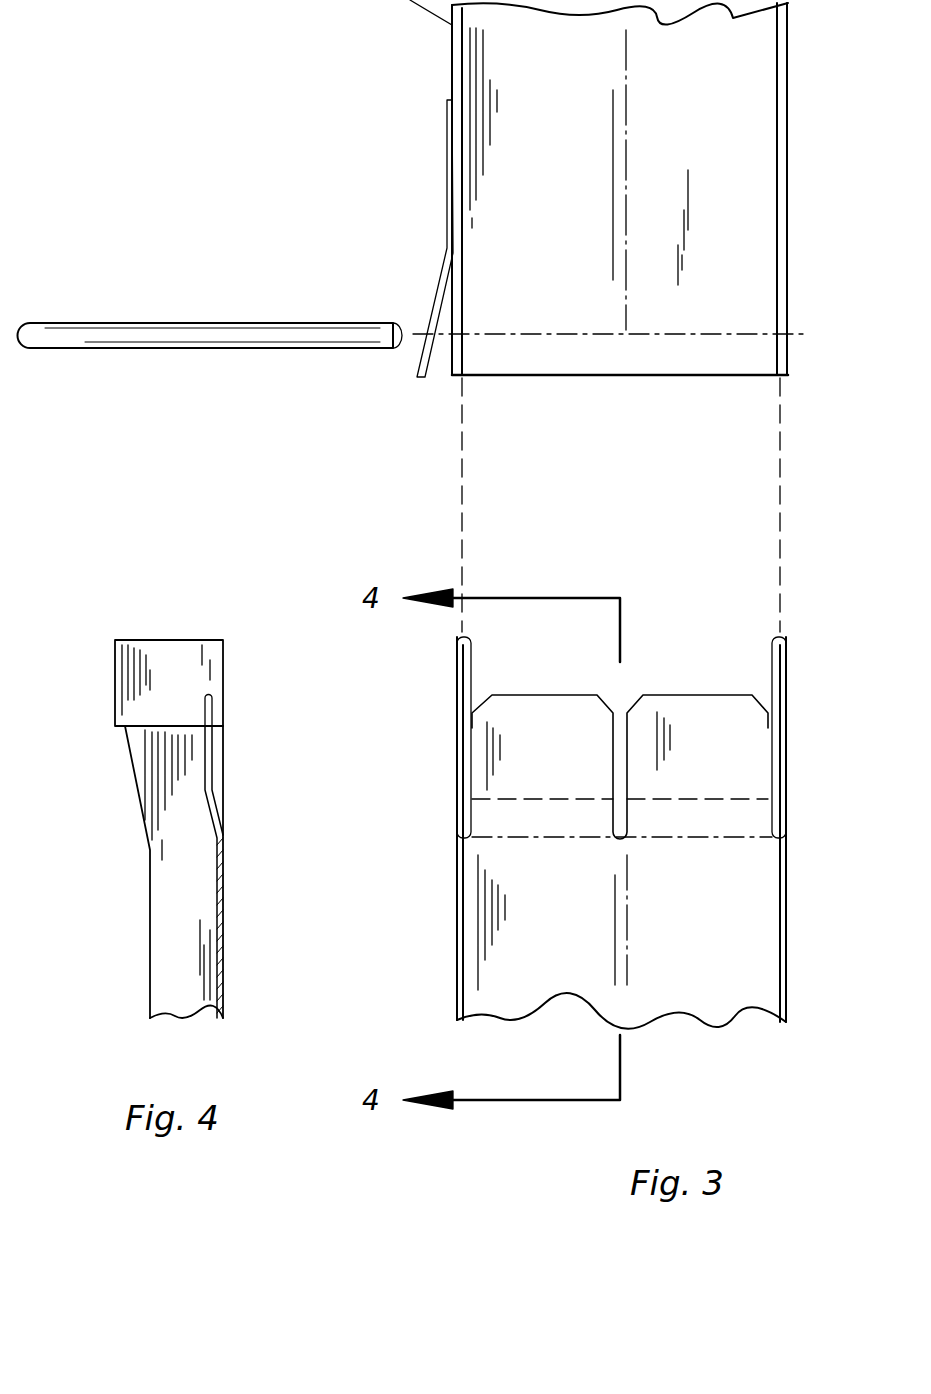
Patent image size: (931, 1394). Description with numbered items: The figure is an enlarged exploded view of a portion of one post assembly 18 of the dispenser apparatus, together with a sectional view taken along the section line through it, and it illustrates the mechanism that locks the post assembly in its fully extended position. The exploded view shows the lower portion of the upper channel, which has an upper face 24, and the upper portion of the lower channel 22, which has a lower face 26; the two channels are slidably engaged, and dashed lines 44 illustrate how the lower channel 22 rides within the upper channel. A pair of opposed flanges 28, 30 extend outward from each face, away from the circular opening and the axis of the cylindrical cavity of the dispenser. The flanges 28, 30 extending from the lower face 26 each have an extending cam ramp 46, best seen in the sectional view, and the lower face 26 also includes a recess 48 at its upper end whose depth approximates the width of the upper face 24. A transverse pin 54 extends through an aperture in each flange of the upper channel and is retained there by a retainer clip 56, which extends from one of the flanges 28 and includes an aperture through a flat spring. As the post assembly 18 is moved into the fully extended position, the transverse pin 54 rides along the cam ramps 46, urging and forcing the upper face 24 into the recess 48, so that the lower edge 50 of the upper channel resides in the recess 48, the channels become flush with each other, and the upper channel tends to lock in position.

In FIG. 3, the post assembly 18 is at (248, 100).
In FIG. 3, the lower channel 22 is at (457, 995).
In FIG. 4, the lower channel 22 is at (122, 872).
In FIG. 3, the upper face 24 is at (694, 145).
In FIG. 3, the lower face 26 is at (698, 943).
In FIG. 3, the flange 28 is at (457, 925).
In FIG. 4, the flange 28 is at (150, 973).
In FIG. 3, the flange 30 is at (787, 917).
In FIG. 3, the dashed lines 44 is at (462, 523).
In FIG. 3, the cam ramp 46 is at (457, 758).
In FIG. 4, the cam ramp 46 is at (142, 795).
In FIG. 3, the recess 48 is at (587, 815).
In FIG. 4, the recess 48 is at (223, 810).
In FIG. 3, the lower edge 50 is at (700, 378).
In FIG. 3, the transverse pin 54 is at (252, 328).
In FIG. 3, the retainer clip 56 is at (428, 312).